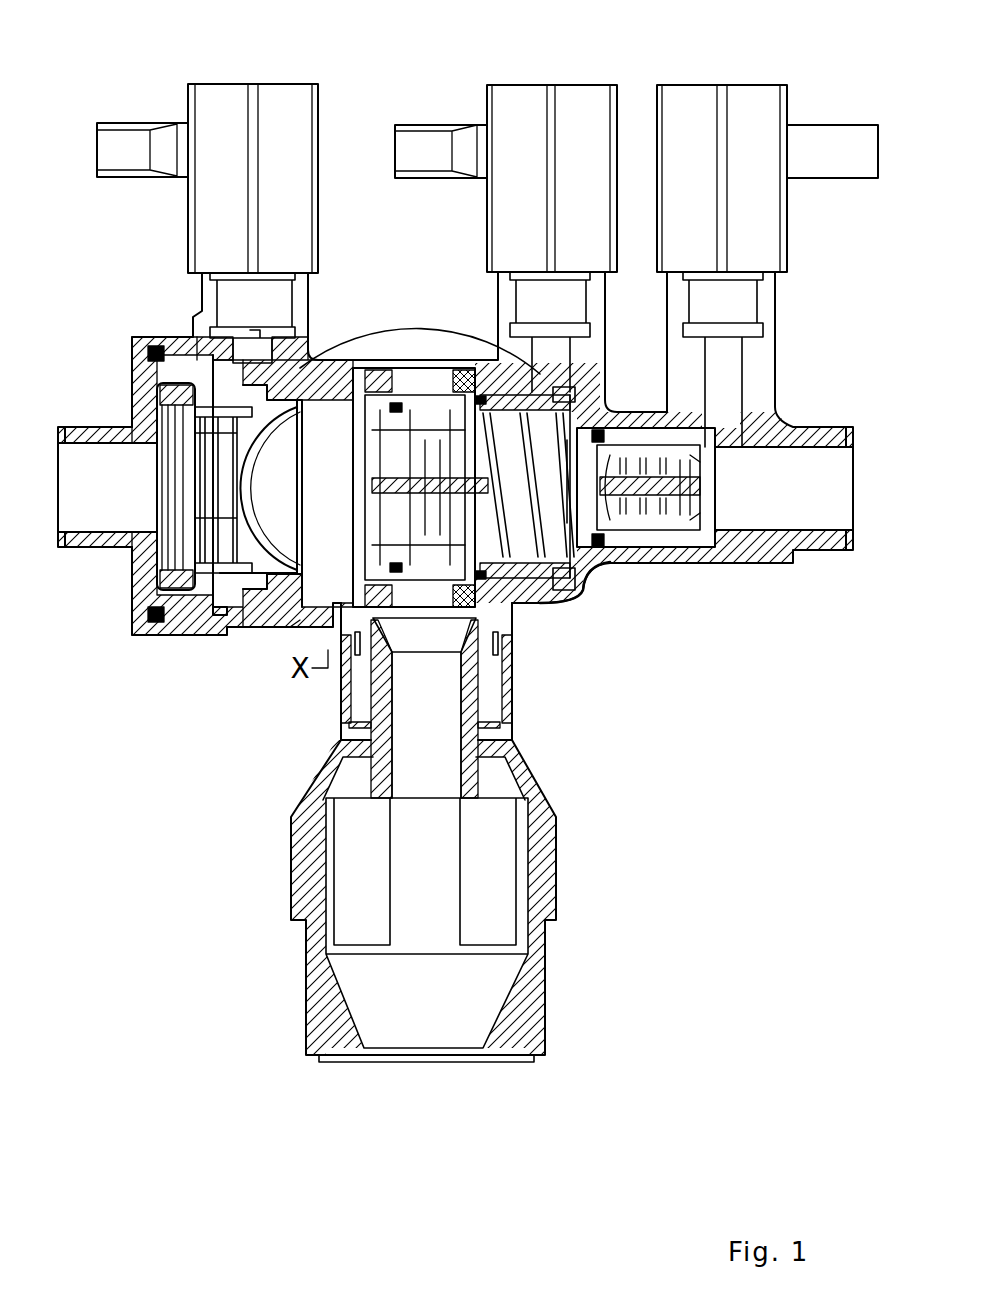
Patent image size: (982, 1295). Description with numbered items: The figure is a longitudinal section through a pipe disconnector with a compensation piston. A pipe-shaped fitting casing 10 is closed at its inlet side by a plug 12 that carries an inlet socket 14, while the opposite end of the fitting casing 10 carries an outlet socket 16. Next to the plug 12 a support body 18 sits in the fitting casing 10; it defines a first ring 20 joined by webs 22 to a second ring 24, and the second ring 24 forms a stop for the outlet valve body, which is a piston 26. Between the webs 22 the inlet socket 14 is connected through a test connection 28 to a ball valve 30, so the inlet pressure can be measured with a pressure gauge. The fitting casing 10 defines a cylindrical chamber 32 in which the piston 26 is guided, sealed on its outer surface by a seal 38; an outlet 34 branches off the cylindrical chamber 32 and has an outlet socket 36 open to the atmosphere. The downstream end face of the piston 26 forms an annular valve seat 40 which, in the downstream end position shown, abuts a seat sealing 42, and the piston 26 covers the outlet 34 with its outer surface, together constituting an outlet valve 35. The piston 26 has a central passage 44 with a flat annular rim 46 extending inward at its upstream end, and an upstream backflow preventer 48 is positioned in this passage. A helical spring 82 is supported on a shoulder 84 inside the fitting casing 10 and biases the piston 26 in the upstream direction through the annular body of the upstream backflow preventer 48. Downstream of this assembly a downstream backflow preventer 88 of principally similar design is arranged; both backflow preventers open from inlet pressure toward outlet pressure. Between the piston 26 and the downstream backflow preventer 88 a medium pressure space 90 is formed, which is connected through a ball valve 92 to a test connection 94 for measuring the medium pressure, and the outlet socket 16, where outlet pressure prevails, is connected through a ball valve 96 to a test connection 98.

The fitting casing 10 is at (221, 507).
The plug 12 is at (130, 580).
The inlet socket 14 is at (105, 420).
The outlet socket 16 is at (788, 550).
The support body 18 is at (233, 350).
The first ring 20 is at (190, 590).
The webs 22 is at (222, 605).
The second ring 24 is at (350, 462).
The piston 26 is at (345, 700).
The test connection 28 is at (132, 145).
The ball valve 30 is at (218, 130).
The cylindrical chamber 32 is at (353, 370).
The outlet 34 is at (497, 633).
The outlet valve 35 is at (503, 723).
The outlet socket 36 is at (558, 806).
The seal 38 is at (400, 368).
The annular valve seat 40 is at (530, 372).
The seat sealing 42 is at (508, 630).
The central passage 44 is at (217, 300).
The flat annular rim 46 is at (253, 520).
The upstream backflow preventer 48 is at (353, 510).
The helical spring 82 is at (570, 425).
The shoulder 84 is at (640, 432).
The downstream backflow preventer 88 is at (648, 550).
The medium pressure space 90 is at (540, 490).
The ball valve 92 is at (567, 132).
The test connection 94 is at (420, 155).
The ball valve 96 is at (737, 160).
The test connection 98 is at (823, 143).